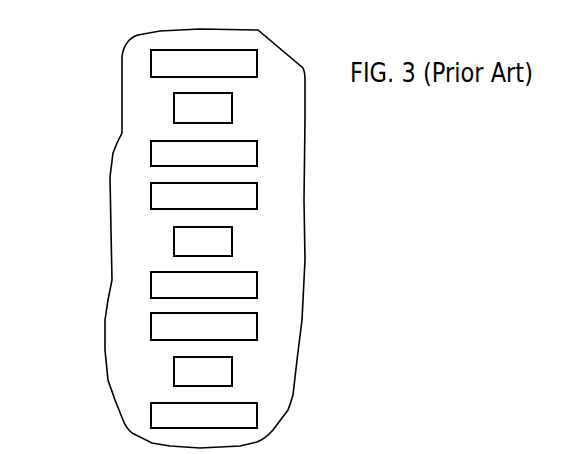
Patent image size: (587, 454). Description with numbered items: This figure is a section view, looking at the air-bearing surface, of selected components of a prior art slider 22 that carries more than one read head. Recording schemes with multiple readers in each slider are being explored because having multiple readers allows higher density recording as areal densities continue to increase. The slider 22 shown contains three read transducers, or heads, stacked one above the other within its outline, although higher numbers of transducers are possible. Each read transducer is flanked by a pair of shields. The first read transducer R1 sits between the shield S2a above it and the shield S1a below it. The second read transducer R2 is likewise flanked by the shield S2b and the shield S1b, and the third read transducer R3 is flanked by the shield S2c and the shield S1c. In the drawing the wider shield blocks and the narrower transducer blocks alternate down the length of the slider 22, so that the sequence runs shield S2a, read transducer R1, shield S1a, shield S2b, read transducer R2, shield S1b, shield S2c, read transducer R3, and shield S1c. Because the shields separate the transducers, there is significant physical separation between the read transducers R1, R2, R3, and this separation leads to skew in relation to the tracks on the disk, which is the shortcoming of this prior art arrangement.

The slider 22 is at (111, 79).
The shield S2a is at (204, 63).
The read transducer R1 is at (203, 108).
The shield S1a is at (204, 153).
The shield S2b is at (204, 196).
The read transducer R2 is at (203, 241).
The shield S1b is at (204, 285).
The shield S2c is at (204, 326).
The read transducer R3 is at (203, 371).
The shield S1c is at (204, 415).